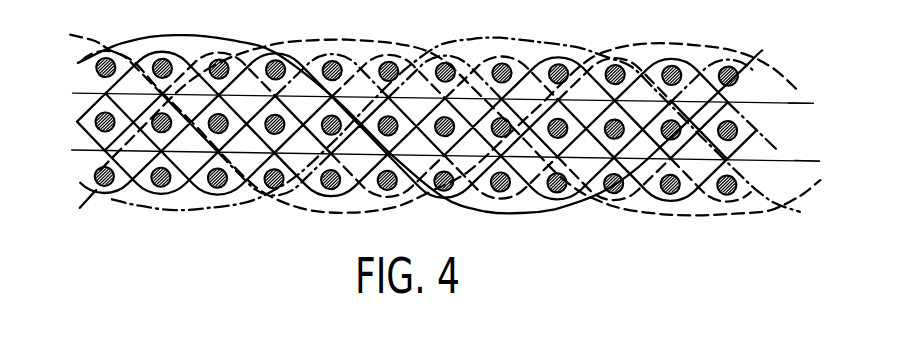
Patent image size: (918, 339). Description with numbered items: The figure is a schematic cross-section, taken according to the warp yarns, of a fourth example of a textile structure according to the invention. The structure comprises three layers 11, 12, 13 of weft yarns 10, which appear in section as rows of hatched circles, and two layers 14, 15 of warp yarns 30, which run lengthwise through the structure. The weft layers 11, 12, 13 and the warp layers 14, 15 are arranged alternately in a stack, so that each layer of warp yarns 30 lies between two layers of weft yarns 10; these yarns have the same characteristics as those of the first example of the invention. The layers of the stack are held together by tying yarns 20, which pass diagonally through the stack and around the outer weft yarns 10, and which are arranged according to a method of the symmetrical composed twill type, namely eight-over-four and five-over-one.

The weft yarns 10 is at (556, 66).
The first layer of weft yarns 11 is at (761, 55).
The second layer of weft yarns 12 is at (748, 126).
The third layer of weft yarns 13 is at (759, 197).
The first layer of warp yarns 14 is at (814, 104).
The second layer of warp yarns 15 is at (821, 163).
The tying yarns 20 is at (79, 62).
The warp yarns 30 is at (812, 103).